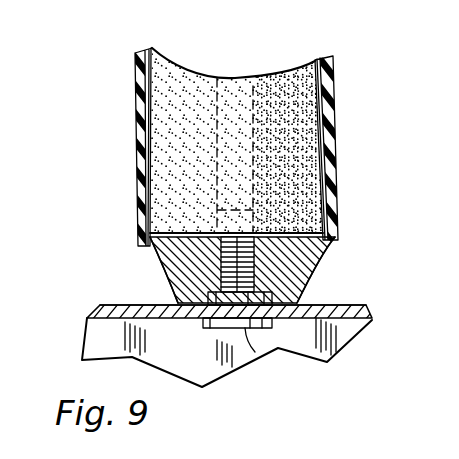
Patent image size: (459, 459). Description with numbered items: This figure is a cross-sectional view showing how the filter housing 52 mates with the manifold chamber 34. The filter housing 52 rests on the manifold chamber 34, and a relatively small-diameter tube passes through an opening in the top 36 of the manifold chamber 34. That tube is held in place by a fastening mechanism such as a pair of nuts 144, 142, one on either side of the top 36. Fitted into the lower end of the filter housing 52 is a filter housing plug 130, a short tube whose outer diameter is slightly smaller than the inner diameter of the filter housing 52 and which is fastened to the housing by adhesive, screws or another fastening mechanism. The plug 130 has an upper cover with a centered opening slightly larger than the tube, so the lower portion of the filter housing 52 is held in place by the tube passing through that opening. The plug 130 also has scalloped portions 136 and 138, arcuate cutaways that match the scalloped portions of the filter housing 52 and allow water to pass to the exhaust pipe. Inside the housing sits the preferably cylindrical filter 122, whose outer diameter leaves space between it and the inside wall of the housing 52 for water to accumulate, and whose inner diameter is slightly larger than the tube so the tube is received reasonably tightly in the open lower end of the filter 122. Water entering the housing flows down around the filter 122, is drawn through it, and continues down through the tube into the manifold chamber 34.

The manifold chamber 34 is at (98, 306).
The top of manifold chamber 36 is at (112, 304).
The filter housing 52 is at (135, 118).
The filter 122 is at (318, 108).
The filter housing plug 130 is at (302, 267).
The scalloped portion of plug 136 is at (298, 287).
The scalloped portion of plug 138 is at (166, 263).
The nut 142 is at (245, 362).
The nut 144 is at (176, 289).